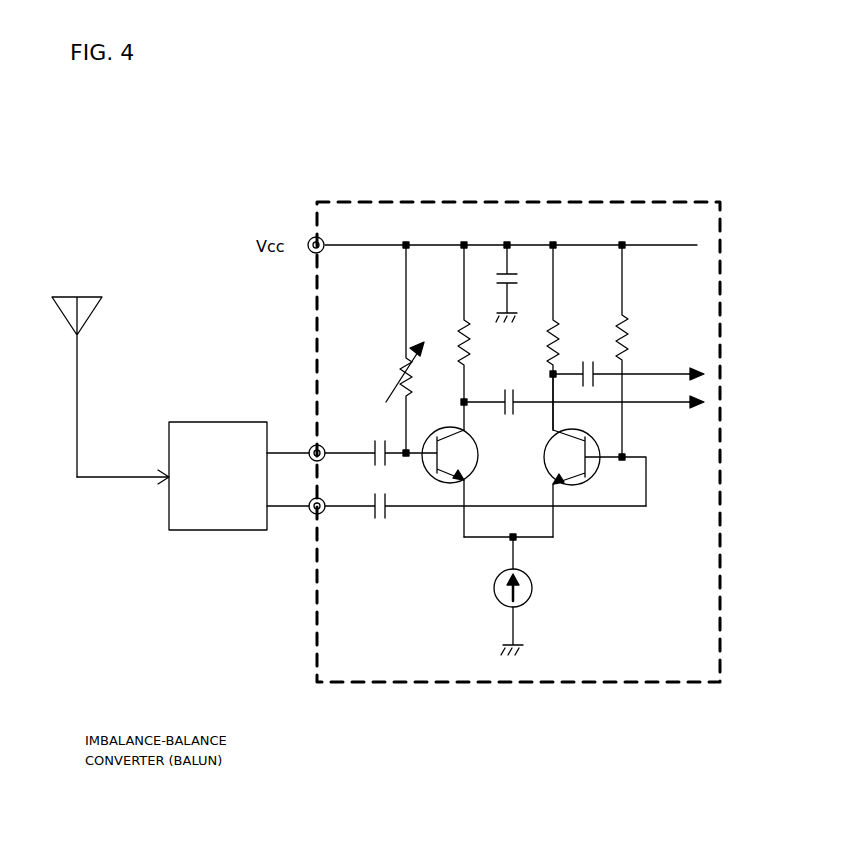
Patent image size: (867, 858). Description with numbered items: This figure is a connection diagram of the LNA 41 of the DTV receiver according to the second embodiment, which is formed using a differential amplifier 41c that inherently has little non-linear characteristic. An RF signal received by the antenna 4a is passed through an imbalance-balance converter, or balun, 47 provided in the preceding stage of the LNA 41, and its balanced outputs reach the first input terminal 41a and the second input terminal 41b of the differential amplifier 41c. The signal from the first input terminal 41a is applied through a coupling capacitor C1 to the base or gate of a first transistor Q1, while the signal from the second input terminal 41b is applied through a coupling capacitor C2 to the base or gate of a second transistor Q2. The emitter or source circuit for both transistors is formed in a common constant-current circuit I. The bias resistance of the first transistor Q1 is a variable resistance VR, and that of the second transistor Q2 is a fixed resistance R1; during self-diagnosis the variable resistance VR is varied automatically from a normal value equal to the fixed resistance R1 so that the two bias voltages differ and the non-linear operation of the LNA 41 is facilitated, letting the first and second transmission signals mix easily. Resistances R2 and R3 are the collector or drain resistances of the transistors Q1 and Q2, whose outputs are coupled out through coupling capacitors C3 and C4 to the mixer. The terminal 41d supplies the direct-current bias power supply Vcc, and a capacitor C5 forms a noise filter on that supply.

The antenna 4a is at (60, 290).
The LNA 41 is at (503, 202).
The first input terminal 41a is at (310, 445).
The second input terminal 41b is at (310, 514).
The differential amplifier 41c is at (398, 636).
The terminal of a direct-current bias power supply 41d is at (309, 240).
The imbalance-balance converter (balun) 47 is at (169, 498).
The coupling capacitor C1 is at (380, 436).
The coupling capacitor C2 is at (372, 520).
The coupling capacitor C3 is at (500, 386).
The coupling capacitor C4 is at (602, 360).
The capacitor of a noise filter C5 is at (529, 278).
The fixed resistance R1 is at (638, 330).
The collector resistance R2 is at (455, 336).
The collector resistance R3 is at (567, 340).
The variable resistance VR is at (390, 352).
The first transistor Q1 is at (449, 487).
The second transistor Q2 is at (590, 487).
The constant-current circuit I is at (485, 592).